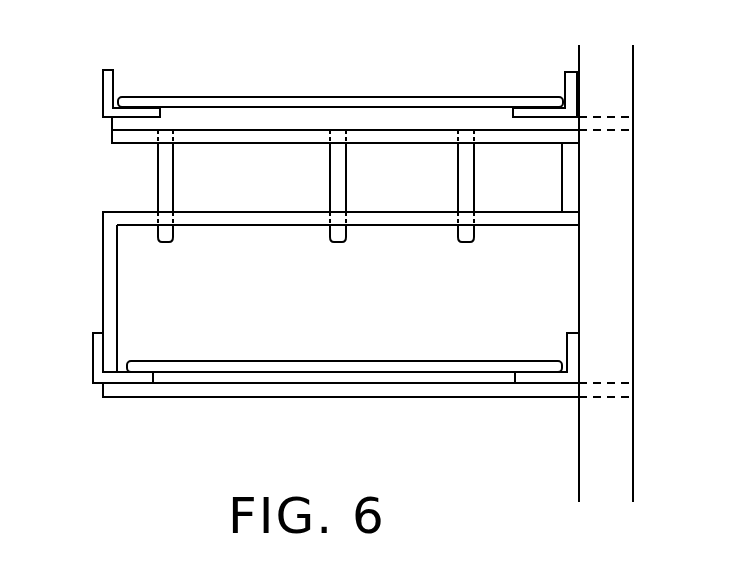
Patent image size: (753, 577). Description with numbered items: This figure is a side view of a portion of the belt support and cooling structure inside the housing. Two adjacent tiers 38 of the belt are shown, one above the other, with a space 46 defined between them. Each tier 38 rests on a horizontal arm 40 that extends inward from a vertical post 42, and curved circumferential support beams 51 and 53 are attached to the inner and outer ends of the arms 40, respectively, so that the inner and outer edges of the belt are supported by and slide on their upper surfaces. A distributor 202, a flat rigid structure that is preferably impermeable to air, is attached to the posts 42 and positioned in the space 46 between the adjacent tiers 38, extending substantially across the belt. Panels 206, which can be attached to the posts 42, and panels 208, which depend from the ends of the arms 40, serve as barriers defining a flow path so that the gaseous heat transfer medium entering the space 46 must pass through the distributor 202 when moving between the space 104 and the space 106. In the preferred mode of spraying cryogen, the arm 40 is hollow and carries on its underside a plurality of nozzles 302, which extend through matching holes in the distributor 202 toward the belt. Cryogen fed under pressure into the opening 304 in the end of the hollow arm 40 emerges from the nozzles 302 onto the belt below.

The tiers 38 is at (277, 96).
The horizontal arms 40 is at (110, 120).
The posts 42 is at (590, 460).
The spaces 46 is at (112, 195).
The circumferential support beam 51 is at (103, 80).
The circumferential support beam 53 is at (565, 78).
The space 104 is at (43, 238).
The space 106 is at (648, 301).
The distributor 202 is at (247, 227).
The panels 206 is at (122, 140).
The panels 208 is at (103, 286).
The nozzles 302 is at (330, 192).
The opening 304 is at (626, 125).